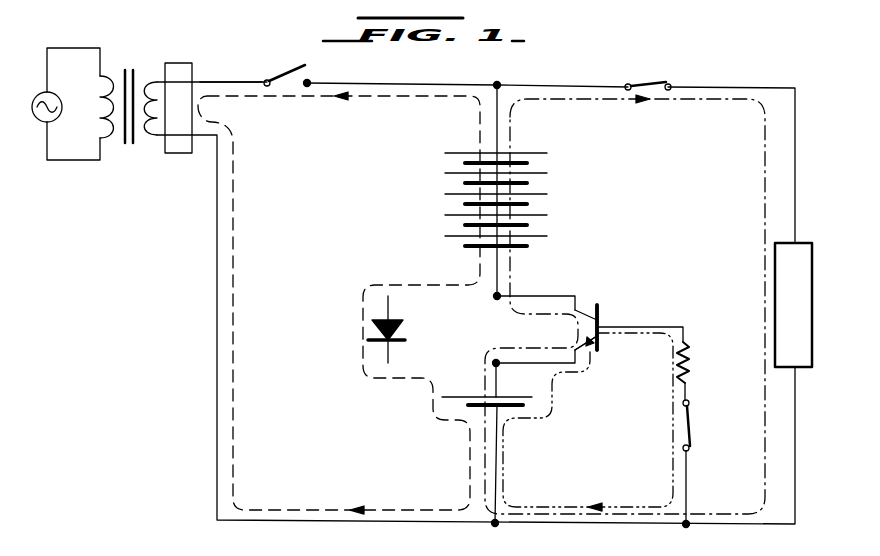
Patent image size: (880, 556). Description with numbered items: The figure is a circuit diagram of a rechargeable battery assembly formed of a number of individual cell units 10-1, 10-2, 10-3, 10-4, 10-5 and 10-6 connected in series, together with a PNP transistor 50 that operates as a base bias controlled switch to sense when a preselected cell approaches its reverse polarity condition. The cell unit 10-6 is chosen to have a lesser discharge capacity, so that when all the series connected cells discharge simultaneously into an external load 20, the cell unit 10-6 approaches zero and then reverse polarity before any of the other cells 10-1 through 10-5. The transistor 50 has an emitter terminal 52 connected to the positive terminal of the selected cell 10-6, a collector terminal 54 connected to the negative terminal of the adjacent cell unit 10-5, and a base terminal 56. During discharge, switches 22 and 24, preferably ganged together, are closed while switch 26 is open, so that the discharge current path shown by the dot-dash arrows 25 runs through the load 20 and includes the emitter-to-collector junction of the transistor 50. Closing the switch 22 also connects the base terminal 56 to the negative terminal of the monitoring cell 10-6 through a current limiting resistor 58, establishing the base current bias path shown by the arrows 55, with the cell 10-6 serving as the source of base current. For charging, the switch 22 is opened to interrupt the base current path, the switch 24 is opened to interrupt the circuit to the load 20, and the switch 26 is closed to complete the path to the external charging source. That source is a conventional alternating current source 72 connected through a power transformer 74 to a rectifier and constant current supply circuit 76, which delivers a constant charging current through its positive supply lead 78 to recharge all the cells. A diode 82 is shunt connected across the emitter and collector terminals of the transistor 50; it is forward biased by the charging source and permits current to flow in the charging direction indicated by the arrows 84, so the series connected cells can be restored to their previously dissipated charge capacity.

The cell unit 10-1 is at (535, 160).
The cell unit 10-2 is at (535, 181).
The cell unit 10-3 is at (535, 202).
The cell unit 10-4 is at (535, 223).
The cell unit 10-5 is at (535, 244).
The cell unit 10-6 is at (460, 402).
The external load 20 is at (831, 230).
The switch 22 is at (695, 433).
The switch 24 is at (643, 85).
The discharge current path 25 is at (649, 102).
The switch 26 is at (285, 74).
The transistor 50 is at (618, 310).
The emitter terminal 52 is at (589, 358).
The collector terminal 54 is at (586, 311).
The base current transistor bias path 55 is at (567, 504).
The base terminal 56 is at (651, 326).
The current limiting resistor 58 is at (694, 363).
The alternating current source 72 is at (42, 120).
The power transformer 74 is at (146, 44).
The rectifier and constant current supply circuit 76 is at (181, 64).
The positive supply lead 78 is at (237, 80).
The diode 82 is at (400, 333).
The charging current arrows 84 is at (368, 100).